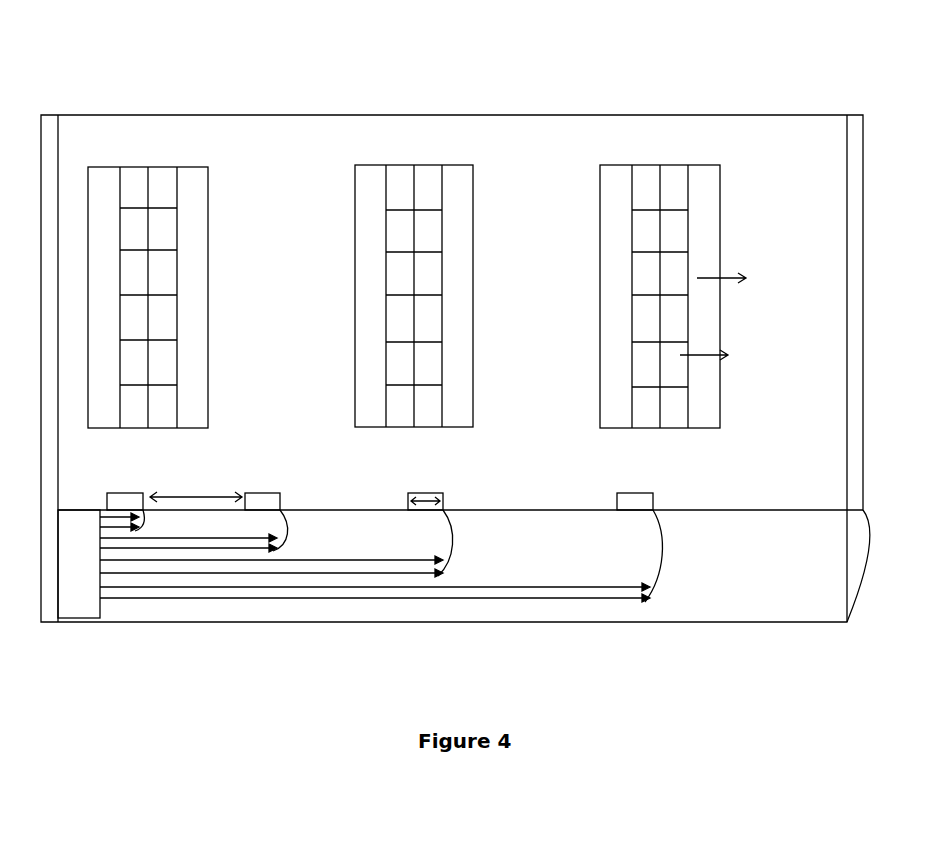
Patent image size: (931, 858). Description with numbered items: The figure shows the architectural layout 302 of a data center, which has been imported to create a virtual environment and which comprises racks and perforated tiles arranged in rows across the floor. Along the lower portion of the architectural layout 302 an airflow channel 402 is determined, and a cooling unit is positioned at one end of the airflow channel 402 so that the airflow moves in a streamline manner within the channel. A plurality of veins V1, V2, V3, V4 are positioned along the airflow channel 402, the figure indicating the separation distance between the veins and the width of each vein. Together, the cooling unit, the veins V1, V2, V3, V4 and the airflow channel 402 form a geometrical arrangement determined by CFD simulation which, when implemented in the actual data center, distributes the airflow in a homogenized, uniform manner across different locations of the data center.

The architectural layout 302 is at (300, 115).
The airflow channel 402 is at (460, 571).
The vein V1 is at (122, 503).
The vein V2 is at (202, 521).
The vein V3 is at (283, 534).
The vein V4 is at (381, 539).